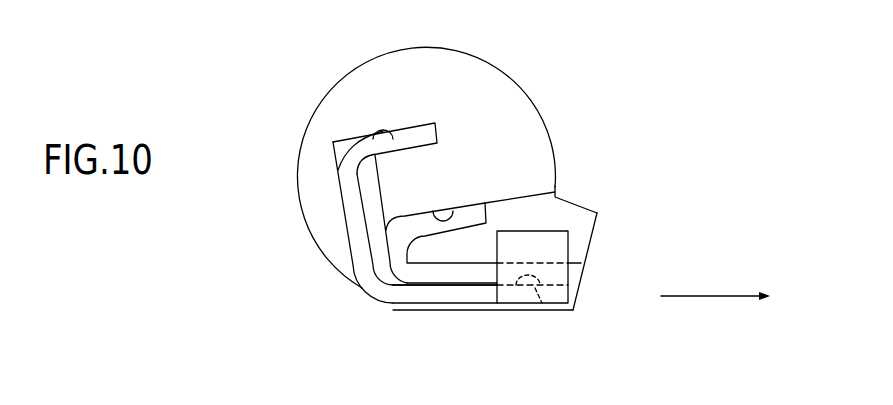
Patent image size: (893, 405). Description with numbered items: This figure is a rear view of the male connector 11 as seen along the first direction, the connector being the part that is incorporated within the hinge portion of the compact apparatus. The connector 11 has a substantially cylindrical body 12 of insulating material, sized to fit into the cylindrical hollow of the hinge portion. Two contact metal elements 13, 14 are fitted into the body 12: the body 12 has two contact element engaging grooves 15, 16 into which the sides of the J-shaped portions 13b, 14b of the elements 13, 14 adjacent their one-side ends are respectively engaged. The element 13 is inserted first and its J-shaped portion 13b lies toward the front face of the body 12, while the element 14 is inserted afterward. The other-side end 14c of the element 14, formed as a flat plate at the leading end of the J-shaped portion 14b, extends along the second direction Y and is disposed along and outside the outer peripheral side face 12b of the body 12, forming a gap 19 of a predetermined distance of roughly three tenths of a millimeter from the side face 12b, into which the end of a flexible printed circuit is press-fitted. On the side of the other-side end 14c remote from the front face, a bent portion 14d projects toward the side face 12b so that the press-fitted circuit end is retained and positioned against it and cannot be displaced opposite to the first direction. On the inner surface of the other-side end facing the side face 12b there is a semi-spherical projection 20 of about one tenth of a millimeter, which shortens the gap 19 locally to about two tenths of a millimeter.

The male connector 11 is at (256, 96).
The body 12 is at (527, 119).
The outer peripheral side face 12b is at (574, 275).
The contact metal element 13 is at (400, 305).
The J-shaped portion 13b is at (397, 260).
The contact metal element 14 is at (371, 300).
The J-shaped portion 14b is at (350, 206).
The other-side end 14c is at (473, 296).
The bent portion 14d is at (554, 242).
The contact element engaging groove 15 is at (452, 213).
The contact element engaging groove 16 is at (393, 130).
The gap 19 is at (580, 281).
The semi-spherical projection 20 is at (545, 312).